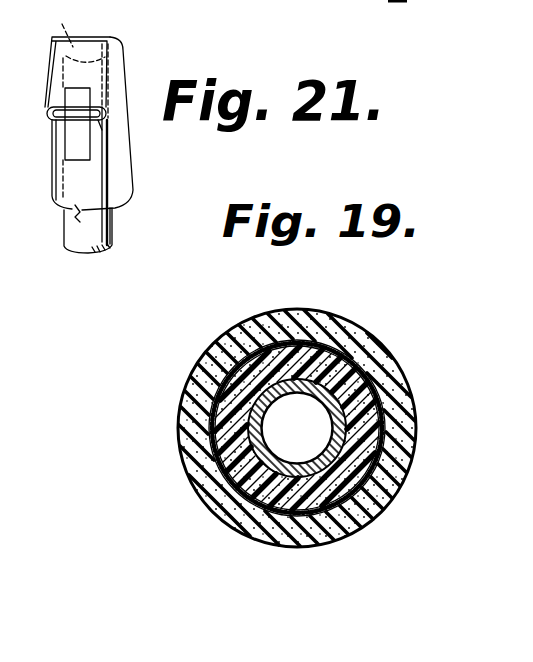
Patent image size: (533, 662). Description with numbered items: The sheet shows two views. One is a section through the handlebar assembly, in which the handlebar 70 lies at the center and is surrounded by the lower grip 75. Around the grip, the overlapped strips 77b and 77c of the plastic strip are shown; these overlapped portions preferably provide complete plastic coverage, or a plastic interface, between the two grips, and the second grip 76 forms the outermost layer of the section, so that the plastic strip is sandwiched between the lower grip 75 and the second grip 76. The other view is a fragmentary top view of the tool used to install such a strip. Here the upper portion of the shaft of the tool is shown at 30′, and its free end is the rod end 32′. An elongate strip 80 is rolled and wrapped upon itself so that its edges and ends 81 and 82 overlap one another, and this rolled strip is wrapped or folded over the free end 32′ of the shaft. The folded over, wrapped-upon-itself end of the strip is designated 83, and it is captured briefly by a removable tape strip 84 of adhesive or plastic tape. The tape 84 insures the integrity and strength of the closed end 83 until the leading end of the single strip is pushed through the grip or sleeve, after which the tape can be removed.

In FIG. 21, the folded over end 83 is at (91, 36).
In FIG. 21, the free end of rod 32′ is at (67, 34).
In FIG. 21, the elongate strip 80 is at (130, 178).
In FIG. 21, the edge of strip 81 is at (105, 133).
In FIG. 21, the edge of strip 82 is at (49, 119).
In FIG. 21, the removable tape strip 84 is at (68, 150).
In FIG. 21, the upper portion of tool shaft 30′ is at (112, 238).
In FIG. 19, the second grip 76 is at (328, 324).
In FIG. 19, the overlapped strip portion 77c is at (209, 413).
In FIG. 19, the overlapped strip portion 77b is at (385, 418).
In FIG. 19, the lower grip 75 is at (340, 395).
In FIG. 19, the handlebar 70 is at (331, 438).